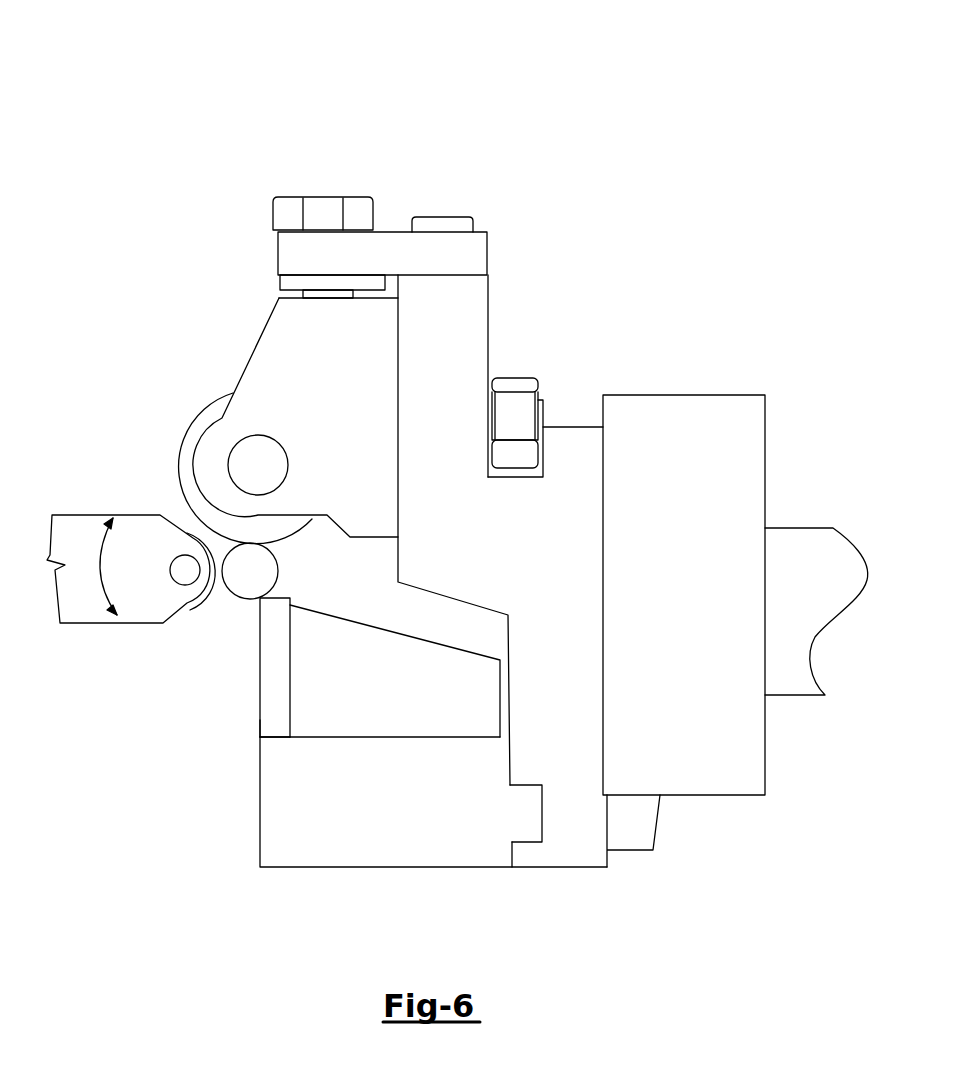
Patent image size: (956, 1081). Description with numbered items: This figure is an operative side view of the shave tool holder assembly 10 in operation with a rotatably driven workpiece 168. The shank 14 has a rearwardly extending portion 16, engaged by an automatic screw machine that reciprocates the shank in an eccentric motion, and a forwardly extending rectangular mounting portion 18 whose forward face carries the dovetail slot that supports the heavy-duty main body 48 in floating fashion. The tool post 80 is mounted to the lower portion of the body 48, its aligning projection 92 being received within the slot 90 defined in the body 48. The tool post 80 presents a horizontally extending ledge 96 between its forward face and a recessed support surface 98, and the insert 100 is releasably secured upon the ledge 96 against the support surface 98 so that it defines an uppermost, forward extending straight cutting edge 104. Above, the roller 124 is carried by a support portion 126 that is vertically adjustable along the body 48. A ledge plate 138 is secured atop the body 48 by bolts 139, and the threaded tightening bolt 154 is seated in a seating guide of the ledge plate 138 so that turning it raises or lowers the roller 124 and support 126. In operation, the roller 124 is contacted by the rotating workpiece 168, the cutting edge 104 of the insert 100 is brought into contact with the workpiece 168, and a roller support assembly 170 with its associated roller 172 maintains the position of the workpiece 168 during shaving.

The shave tool holder assembly 10 is at (215, 130).
The shank 14 is at (777, 390).
The rearwardly extending portion 16 is at (805, 537).
The mounting portion 18 is at (645, 392).
The main body 48 is at (503, 312).
The tool post 80 is at (372, 868).
The slot 90 is at (527, 815).
The aligning projection 92 is at (547, 797).
The ledge 96 is at (273, 732).
The recessed support surface 98 is at (283, 668).
The insert 100 is at (252, 644).
The cutting edge 104 is at (295, 580).
The roller 124 is at (190, 443).
The support portion 126 is at (290, 362).
The ledge plate 138 is at (475, 252).
The bolts 139 is at (443, 215).
The threaded tightening bolt 154 is at (293, 185).
The workpiece 168 is at (232, 590).
The roller support assembly 170 is at (153, 520).
The roller 172 is at (193, 602).